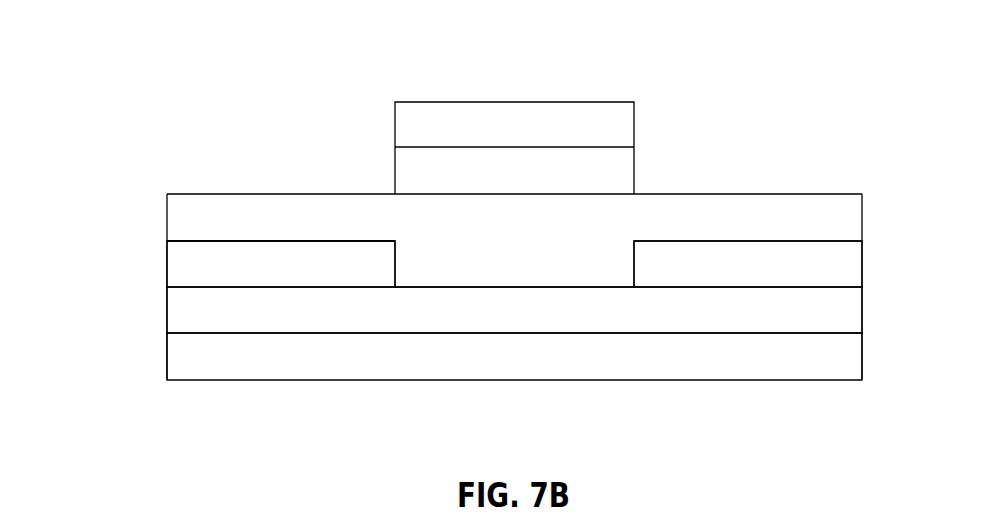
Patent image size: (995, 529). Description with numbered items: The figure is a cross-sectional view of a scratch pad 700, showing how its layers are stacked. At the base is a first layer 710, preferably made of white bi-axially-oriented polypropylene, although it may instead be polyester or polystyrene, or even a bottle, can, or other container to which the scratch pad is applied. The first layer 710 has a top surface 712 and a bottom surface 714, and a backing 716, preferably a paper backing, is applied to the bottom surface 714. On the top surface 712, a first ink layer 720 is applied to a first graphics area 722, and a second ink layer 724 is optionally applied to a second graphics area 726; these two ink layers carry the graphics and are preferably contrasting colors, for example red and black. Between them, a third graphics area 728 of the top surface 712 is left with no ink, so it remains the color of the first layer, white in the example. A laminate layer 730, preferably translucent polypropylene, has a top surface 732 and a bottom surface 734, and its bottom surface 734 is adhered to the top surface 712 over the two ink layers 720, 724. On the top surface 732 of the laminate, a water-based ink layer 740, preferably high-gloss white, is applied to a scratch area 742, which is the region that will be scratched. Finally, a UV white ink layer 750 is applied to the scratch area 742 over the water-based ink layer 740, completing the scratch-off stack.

The scratch pad 700 is at (147, 67).
The first layer 710 is at (840, 310).
The top surface 712 is at (596, 290).
The bottom surface 714 is at (423, 332).
The backing 716 is at (840, 357).
The first ink layer 720 is at (207, 263).
The first graphics area 722 is at (300, 285).
The second ink layer 724 is at (840, 264).
The second graphics area 726 is at (708, 285).
The third graphics area 728 is at (495, 285).
The laminate layer 730 is at (840, 218).
The top surface 732 is at (196, 199).
The bottom surface 734 is at (195, 240).
The water-based ink layer 740 is at (613, 172).
The scratch area 742 is at (425, 189).
The UV white ink layer 750 is at (613, 125).